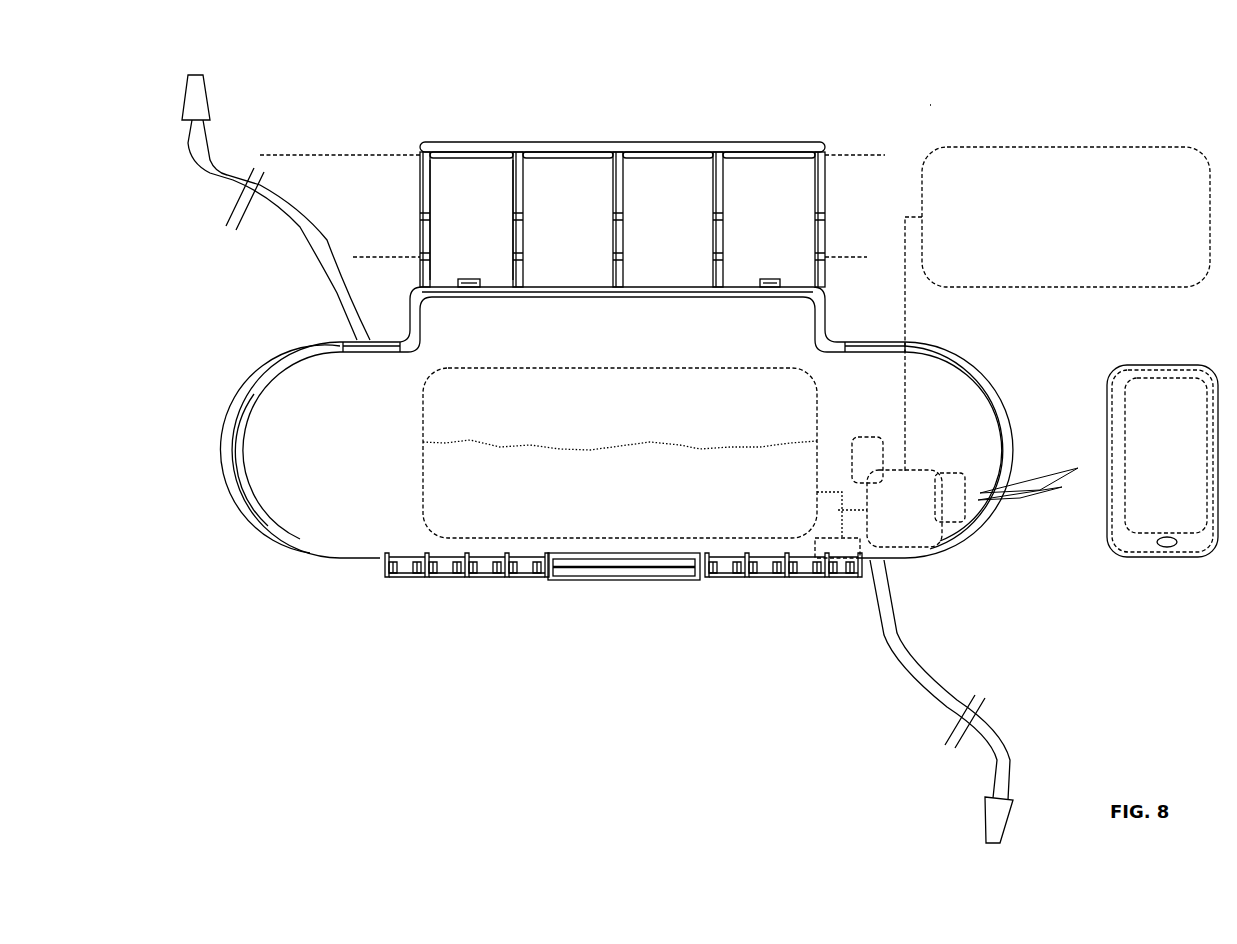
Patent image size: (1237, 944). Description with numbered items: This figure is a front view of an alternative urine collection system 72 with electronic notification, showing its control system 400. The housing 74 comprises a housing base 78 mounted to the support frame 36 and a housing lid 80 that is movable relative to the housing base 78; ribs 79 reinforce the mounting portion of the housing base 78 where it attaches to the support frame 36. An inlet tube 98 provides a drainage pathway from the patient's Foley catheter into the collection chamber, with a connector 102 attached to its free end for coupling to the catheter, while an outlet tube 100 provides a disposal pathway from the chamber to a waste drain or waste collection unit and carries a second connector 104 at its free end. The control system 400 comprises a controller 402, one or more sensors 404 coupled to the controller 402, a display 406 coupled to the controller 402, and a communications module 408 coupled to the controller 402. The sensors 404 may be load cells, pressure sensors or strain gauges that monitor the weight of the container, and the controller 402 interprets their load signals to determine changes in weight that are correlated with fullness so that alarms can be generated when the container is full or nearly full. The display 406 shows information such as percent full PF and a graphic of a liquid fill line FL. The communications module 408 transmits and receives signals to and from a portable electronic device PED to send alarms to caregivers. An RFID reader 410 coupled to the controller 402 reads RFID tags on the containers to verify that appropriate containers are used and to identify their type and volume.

The support frame 36 is at (350, 155).
The urine collection system 72 is at (934, 104).
The housing 74 is at (316, 597).
The housing base 78 is at (831, 246).
The ribs 79 is at (525, 165).
The housing lid 80 is at (242, 540).
The inlet tube 98 is at (303, 230).
The outlet tube 100 is at (893, 655).
The connector 102 is at (208, 100).
The second connector 104 is at (985, 812).
The control system 400 is at (974, 560).
The controller 402 is at (926, 522).
The sensors 404 is at (812, 547).
The display 406 is at (423, 410).
The communications module 408 is at (977, 450).
The RFID reader 410 is at (856, 437).
The liquid fill line FL is at (515, 450).
The percent full PF is at (1112, 178).
The portable electronic device PED is at (1110, 375).